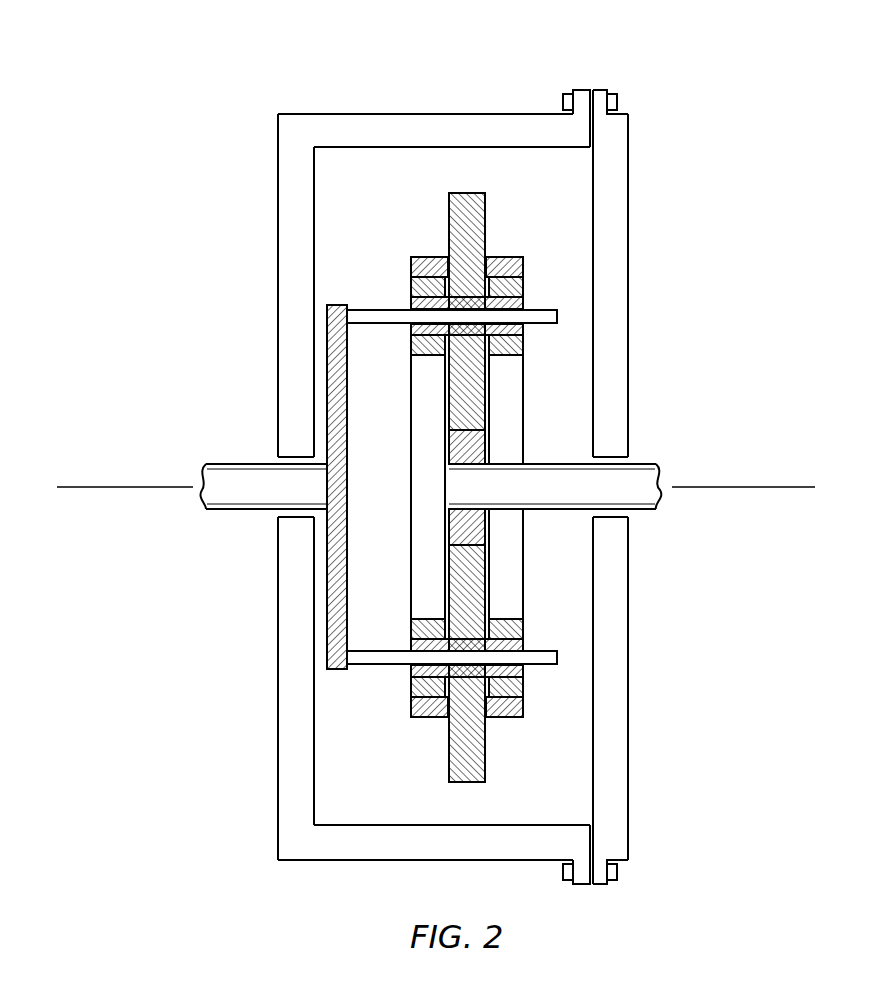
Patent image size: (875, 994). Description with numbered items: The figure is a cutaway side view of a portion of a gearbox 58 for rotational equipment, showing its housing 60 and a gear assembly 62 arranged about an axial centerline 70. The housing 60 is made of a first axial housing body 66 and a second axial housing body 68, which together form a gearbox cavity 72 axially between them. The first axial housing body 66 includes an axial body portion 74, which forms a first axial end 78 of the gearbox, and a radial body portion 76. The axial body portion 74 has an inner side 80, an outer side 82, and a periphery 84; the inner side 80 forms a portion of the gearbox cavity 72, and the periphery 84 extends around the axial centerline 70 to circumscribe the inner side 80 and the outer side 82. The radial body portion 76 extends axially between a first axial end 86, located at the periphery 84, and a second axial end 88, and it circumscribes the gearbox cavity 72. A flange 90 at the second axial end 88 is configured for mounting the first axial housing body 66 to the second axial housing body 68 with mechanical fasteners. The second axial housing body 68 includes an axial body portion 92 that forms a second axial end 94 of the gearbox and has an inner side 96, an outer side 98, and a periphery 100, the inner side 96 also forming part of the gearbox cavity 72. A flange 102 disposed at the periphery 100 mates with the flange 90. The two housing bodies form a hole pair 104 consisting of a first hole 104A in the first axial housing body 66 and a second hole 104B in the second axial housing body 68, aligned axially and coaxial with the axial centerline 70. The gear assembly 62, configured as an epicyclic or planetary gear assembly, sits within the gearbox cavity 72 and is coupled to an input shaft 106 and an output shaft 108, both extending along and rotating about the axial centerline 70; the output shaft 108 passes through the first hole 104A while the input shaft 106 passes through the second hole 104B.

The gearbox 58 is at (766, 180).
The housing 60 is at (644, 713).
The gear assembly 62 is at (550, 593).
The first axial housing body 66 is at (395, 468).
The second axial housing body 68 is at (646, 487).
The axial centerline 70 is at (755, 487).
The gearbox cavity 72 is at (378, 792).
The axial body portion 74 is at (293, 658).
The radial body portion 76 is at (470, 843).
The first axial end 78 is at (246, 592).
The inner side 80 is at (316, 706).
The outer side 82 is at (278, 700).
The periphery 84 is at (308, 114).
The first axial end 86 is at (277, 100).
The second axial end 88 is at (607, 88).
The flange 90 is at (580, 868).
The axial body portion 92 is at (610, 361).
The second axial end 94 is at (658, 286).
The inner side 96 is at (592, 228).
The outer side 98 is at (630, 243).
The periphery 100 is at (628, 87).
The flange 102 is at (601, 100).
The hole pair 104 is at (460, 474).
The first hole 104A is at (270, 456).
The second hole 104B is at (639, 457).
The input shaft 106 is at (639, 483).
The output shaft 108 is at (241, 480).